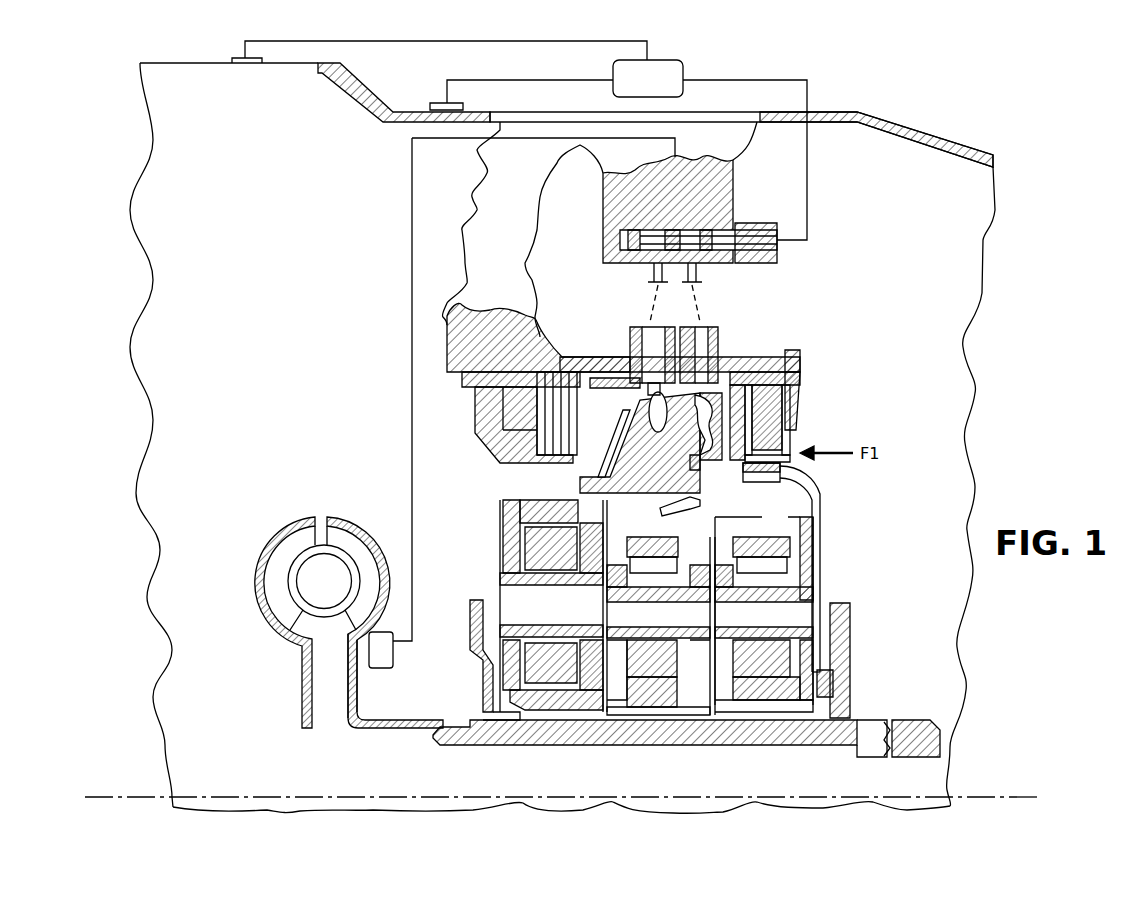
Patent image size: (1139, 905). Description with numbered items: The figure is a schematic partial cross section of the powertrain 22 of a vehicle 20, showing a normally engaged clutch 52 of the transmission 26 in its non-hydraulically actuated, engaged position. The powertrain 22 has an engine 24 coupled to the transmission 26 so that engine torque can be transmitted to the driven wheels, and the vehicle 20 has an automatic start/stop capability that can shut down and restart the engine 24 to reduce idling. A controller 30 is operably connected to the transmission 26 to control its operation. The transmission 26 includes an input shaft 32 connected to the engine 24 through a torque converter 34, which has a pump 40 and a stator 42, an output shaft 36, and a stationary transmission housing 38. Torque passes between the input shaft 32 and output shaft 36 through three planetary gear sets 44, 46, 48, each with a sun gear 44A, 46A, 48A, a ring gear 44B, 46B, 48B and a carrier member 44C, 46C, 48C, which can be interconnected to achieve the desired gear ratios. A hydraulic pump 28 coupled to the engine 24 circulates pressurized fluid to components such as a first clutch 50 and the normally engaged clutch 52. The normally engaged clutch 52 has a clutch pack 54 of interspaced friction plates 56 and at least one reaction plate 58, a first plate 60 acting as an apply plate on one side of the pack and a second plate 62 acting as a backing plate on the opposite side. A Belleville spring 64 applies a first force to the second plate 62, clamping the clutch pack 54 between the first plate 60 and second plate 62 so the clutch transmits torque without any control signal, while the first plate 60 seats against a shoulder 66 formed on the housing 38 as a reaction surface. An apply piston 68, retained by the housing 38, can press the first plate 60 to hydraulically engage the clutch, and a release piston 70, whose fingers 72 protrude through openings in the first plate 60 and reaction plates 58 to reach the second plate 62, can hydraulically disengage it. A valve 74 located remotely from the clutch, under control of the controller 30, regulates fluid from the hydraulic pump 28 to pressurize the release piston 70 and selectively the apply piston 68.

The vehicle 20 is at (1030, 121).
The powertrain 22 is at (173, 705).
The engine 24 is at (256, 256).
The transmission 26 is at (880, 119).
The hydraulic pump 28 is at (393, 650).
The controller 30 is at (670, 58).
The input shaft 32 is at (478, 745).
The torque converter 34 is at (335, 625).
The output shaft 36 is at (912, 718).
The transmission housing 38 is at (358, 85).
The pump 40 is at (260, 560).
The stator 42 is at (360, 536).
The first planetary gear set 44 is at (517, 638).
The sun gear 44A is at (550, 702).
The ring gear 44B is at (503, 497).
The carrier member 44C is at (500, 572).
The second planetary gear set 46 is at (648, 644).
The sun gear 46A is at (685, 700).
The ring gear 46B is at (642, 548).
The carrier member 46C is at (610, 630).
The third planetary gear set 48 is at (814, 648).
The sun gear 48A is at (833, 690).
The ring gear 48B is at (820, 540).
The carrier member 48C is at (810, 570).
The first clutch 50 is at (503, 420).
The normally engaged clutch 52 is at (818, 381).
The clutch pack 54 is at (792, 560).
The friction plates 56 is at (782, 458).
The reaction plate 58 is at (772, 447).
The first plate 60 is at (784, 433).
The second plate 62 is at (768, 420).
The Belleville spring 64 is at (792, 395).
The shoulder 66 is at (718, 356).
The apply piston 68 is at (672, 504).
The release piston 70 is at (698, 464).
The fingers 72 is at (745, 372).
The valve 74 is at (775, 212).